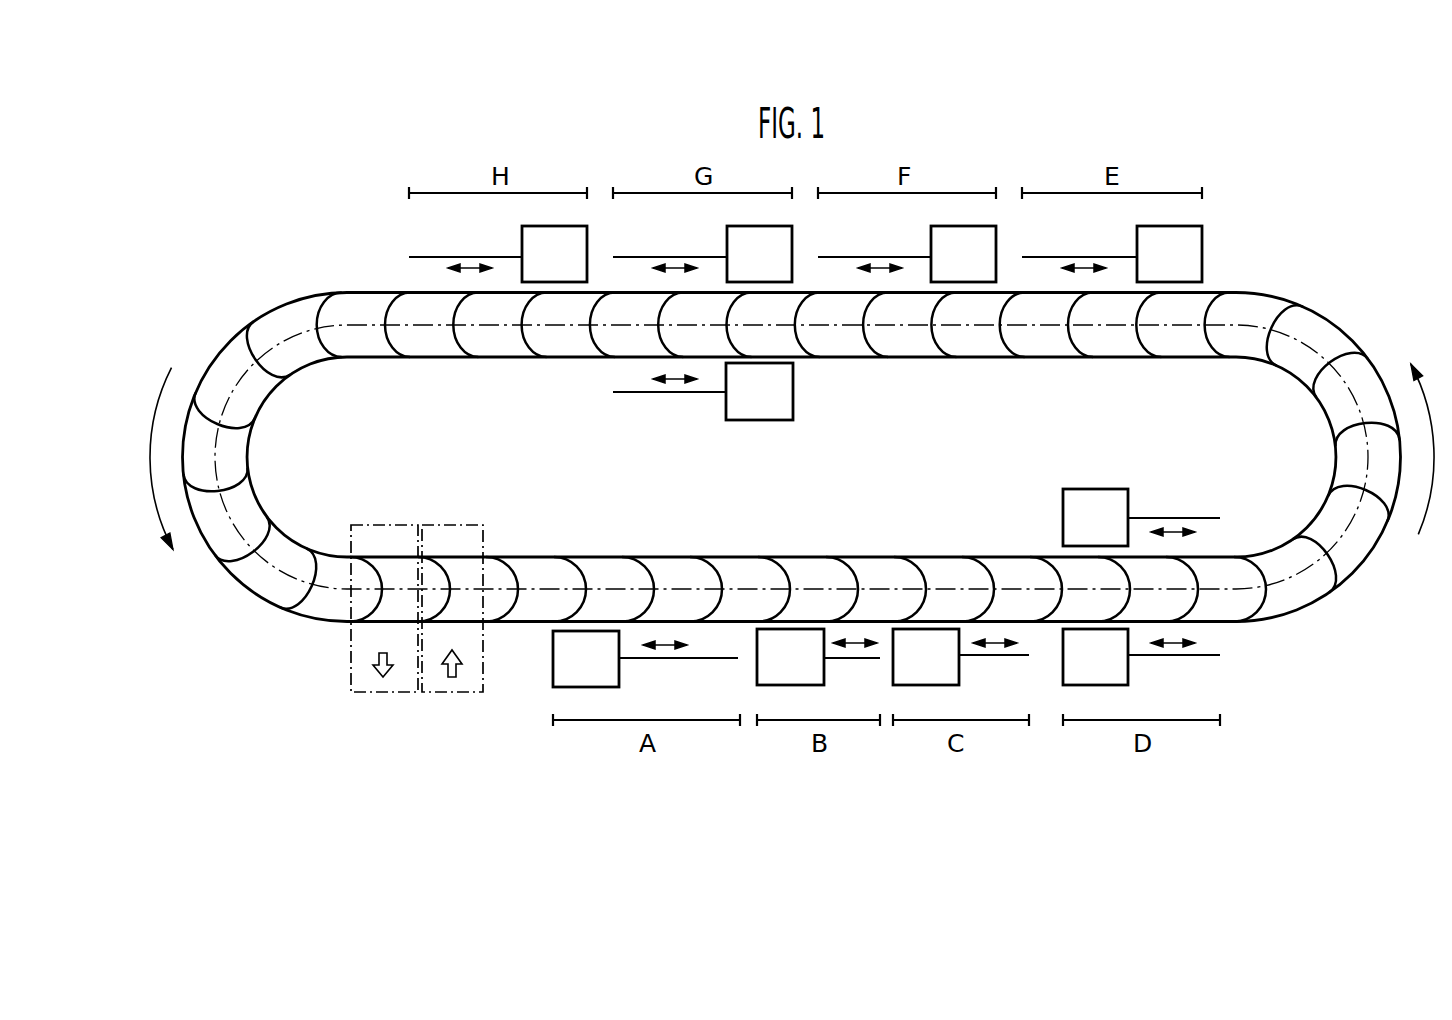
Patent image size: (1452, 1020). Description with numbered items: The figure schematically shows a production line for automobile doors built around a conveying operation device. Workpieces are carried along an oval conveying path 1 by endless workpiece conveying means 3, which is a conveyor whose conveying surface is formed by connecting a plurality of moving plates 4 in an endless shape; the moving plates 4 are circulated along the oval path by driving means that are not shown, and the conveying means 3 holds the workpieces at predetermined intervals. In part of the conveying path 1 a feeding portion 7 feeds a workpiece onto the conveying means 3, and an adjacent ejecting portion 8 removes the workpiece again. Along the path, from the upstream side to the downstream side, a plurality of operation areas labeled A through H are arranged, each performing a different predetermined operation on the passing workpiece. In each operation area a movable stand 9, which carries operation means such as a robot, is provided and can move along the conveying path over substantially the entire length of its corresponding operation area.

The conveying path 1 is at (538, 588).
The workpiece conveying means 3 is at (1315, 300).
The moving plate 4 is at (1322, 331).
The feeding portion 7 is at (456, 695).
The ejecting portion 8 is at (385, 695).
The movable stand 9 is at (573, 243).